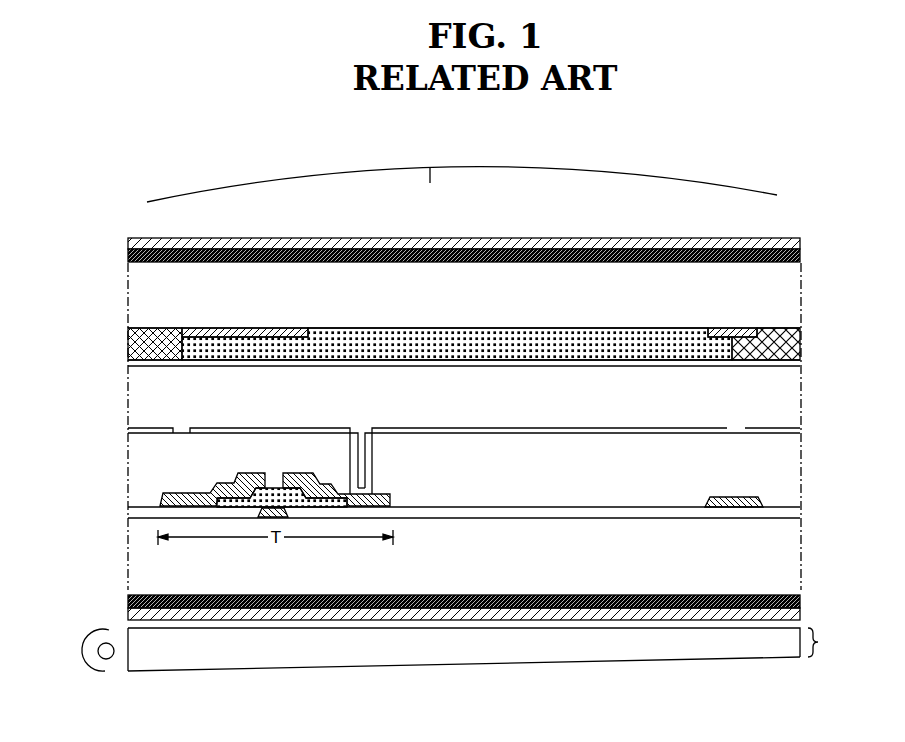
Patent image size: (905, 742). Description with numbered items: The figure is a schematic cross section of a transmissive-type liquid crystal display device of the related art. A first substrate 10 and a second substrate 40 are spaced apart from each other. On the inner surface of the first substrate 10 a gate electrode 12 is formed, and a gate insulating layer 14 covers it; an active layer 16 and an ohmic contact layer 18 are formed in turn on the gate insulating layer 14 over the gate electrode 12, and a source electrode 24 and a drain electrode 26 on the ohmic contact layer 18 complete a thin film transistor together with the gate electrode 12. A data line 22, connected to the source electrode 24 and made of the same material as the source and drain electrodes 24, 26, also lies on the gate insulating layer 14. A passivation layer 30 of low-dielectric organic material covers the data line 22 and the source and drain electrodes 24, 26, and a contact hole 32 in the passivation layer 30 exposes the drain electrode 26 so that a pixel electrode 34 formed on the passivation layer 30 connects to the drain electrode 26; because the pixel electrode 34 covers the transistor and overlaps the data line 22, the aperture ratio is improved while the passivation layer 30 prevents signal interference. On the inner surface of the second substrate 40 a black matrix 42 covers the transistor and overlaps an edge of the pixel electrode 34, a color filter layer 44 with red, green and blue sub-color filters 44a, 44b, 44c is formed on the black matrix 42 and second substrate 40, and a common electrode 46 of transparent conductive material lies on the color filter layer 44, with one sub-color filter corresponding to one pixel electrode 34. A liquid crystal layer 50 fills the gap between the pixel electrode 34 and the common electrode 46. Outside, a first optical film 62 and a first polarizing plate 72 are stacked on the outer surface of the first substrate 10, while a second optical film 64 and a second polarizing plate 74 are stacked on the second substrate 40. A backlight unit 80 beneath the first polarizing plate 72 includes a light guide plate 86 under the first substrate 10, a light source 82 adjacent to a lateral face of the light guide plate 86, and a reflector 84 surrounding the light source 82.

The first substrate 10 is at (485, 588).
The gate electrode 12 is at (268, 518).
The gate insulating layer 14 is at (612, 509).
The active layer 16 is at (273, 487).
The ohmic contact layer 18 is at (243, 472).
The data line 22 is at (737, 496).
The source electrode 24 is at (258, 472).
The drain electrode 26 is at (331, 483).
The passivation layer 30 is at (184, 448).
The contact hole 32 is at (362, 428).
The pixel electrode 34 is at (150, 427).
The second substrate 40 is at (311, 282).
The black matrix 42 is at (232, 328).
The color filter layer 44 is at (462, 175).
The red sub-color filter 44a is at (150, 326).
The green sub-color filter 44b is at (434, 328).
The blue sub-color filter 44c is at (776, 328).
The common electrode 46 is at (564, 364).
The liquid crystal layer 50 is at (783, 398).
The first optical film 62 is at (802, 600).
The second optical film 64 is at (802, 261).
The first polarizing plate 72 is at (802, 617).
The second polarizing plate 74 is at (802, 247).
The backlight unit 80 is at (484, 649).
The light source 82 is at (107, 643).
The reflector 84 is at (87, 651).
The light guide plate 86 is at (383, 656).